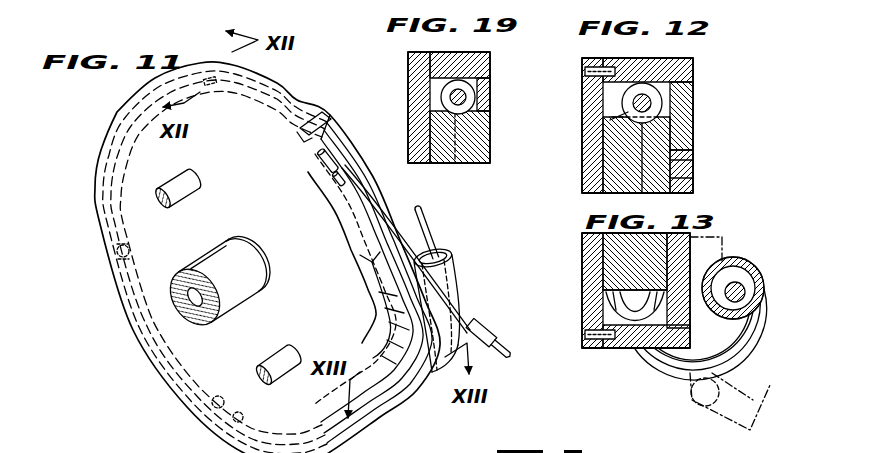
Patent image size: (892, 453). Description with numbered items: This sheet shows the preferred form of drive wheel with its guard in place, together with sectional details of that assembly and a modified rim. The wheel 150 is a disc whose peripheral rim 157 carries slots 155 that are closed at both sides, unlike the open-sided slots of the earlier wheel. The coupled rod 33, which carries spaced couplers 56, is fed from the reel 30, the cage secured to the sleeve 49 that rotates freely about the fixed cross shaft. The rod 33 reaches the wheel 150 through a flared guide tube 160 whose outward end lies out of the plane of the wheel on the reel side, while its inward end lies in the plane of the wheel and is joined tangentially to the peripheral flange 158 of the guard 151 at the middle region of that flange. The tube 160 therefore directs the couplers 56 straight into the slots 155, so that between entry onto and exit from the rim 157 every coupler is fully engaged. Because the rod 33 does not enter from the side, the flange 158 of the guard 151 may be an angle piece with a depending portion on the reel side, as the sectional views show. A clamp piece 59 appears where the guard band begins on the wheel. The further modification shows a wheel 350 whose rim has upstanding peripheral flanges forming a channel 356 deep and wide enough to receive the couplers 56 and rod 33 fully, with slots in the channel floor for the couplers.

In FIG. 13, the reel 30 is at (748, 394).
In FIG. 11, the coupled rod 33 is at (378, 226).
In FIG. 19, the coupled rod 33 is at (467, 97).
In FIG. 12, the coupled rod 33 is at (652, 102).
In FIG. 13, the coupled rod 33 is at (737, 283).
In FIG. 11, the sleeve 49 is at (228, 297).
In FIG. 11, the couplers 56 is at (115, 247).
In FIG. 19, the couplers 56 is at (458, 80).
In FIG. 12, the couplers 56 is at (642, 86).
In FIG. 11, the clamp 59 is at (300, 135).
In FIG. 11, the wheel 150 is at (340, 154).
In FIG. 12, the wheel 150 is at (618, 157).
In FIG. 13, the wheel 150 is at (620, 246).
In FIG. 11, the guard 151 is at (327, 304).
In FIG. 12, the guard 151 is at (589, 112).
In FIG. 13, the guard 151 is at (589, 270).
In FIG. 11, the slots 155 is at (133, 234).
In FIG. 12, the slots 155 is at (628, 118).
In FIG. 11, the rim 157 is at (368, 248).
In FIG. 12, the rim 157 is at (609, 110).
In FIG. 13, the rim 157 is at (610, 300).
In FIG. 11, the peripheral flange 158 is at (393, 336).
In FIG. 12, the peripheral flange 158 is at (678, 66).
In FIG. 13, the peripheral flange 158 is at (618, 348).
In FIG. 11, the flared guide tube 160 is at (448, 279).
In FIG. 13, the flared guide tube 160 is at (765, 293).
In FIG. 19, the wheel 350 is at (460, 140).
In FIG. 19, the peripheral channel 356 is at (478, 72).